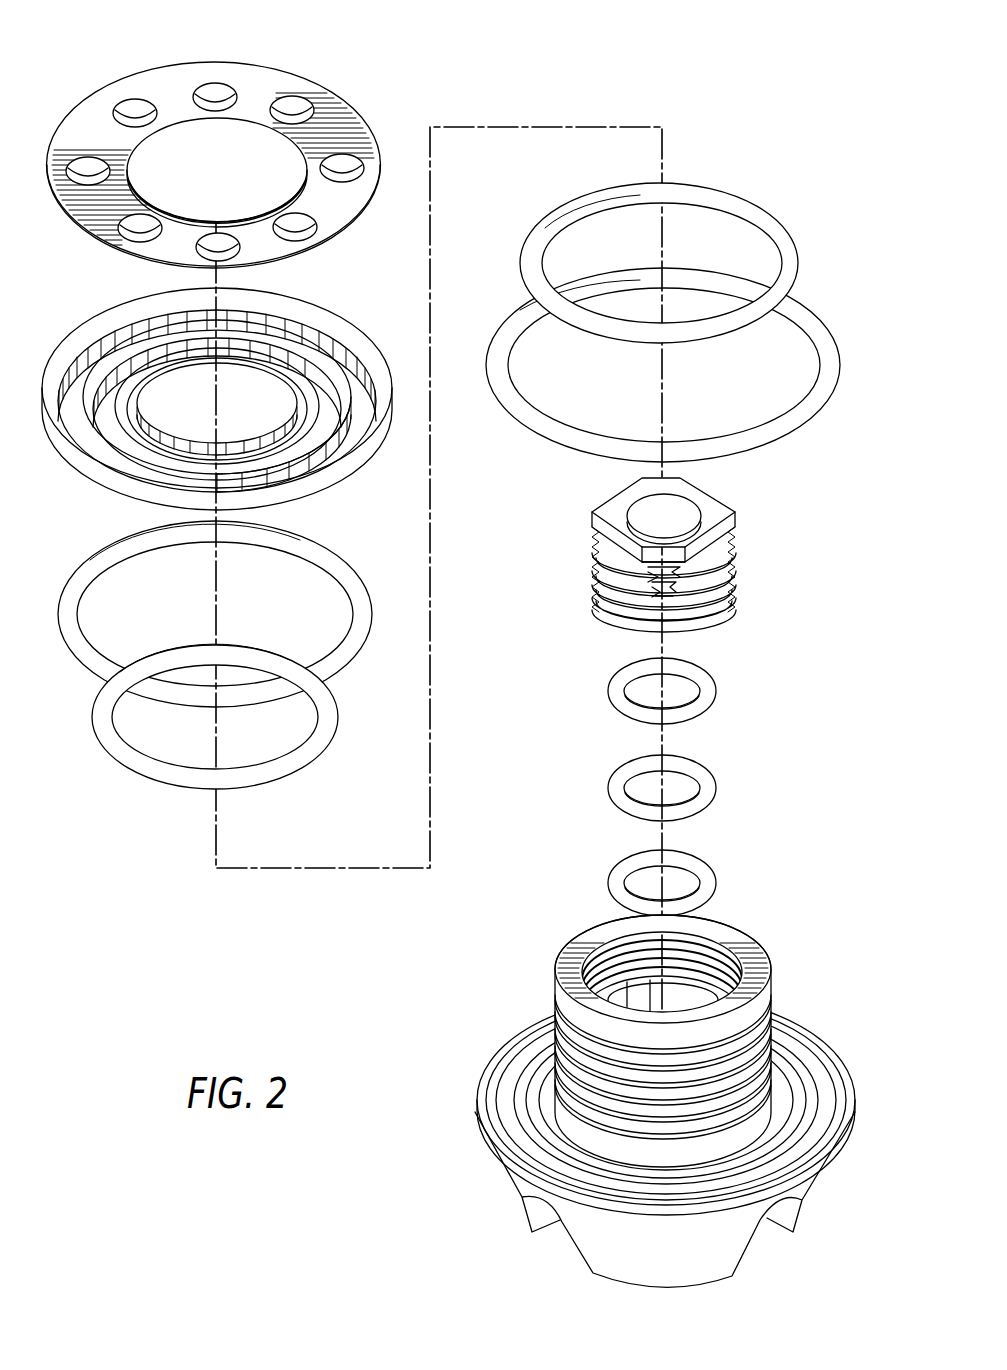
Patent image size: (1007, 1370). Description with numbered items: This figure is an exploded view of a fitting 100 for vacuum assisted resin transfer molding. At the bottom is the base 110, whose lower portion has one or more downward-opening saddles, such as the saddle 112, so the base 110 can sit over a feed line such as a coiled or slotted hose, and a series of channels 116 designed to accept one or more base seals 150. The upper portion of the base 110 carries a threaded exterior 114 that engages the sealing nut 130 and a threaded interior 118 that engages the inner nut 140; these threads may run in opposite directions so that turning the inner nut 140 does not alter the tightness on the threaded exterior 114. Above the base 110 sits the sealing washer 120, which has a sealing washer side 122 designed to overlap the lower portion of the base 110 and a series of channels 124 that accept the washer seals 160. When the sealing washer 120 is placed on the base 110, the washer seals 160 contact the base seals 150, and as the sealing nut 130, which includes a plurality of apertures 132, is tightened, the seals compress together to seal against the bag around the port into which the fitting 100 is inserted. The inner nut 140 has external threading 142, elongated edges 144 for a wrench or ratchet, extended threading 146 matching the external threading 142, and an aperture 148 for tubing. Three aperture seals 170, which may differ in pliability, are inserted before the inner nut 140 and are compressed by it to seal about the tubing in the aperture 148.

The fitting 100 is at (705, 160).
The base 110 is at (649, 1091).
The saddle 112 is at (562, 1222).
The threaded exterior 114 is at (562, 1010).
The channels 116 is at (833, 1100).
The threaded interior 118 is at (603, 960).
The sealing washer 120 is at (227, 388).
The sealing washer side 122 is at (112, 327).
The channels 124 is at (343, 450).
The sealing nut 130 is at (270, 73).
The apertures 132 is at (343, 184).
The inner nut 140 is at (685, 549).
The external threading 142 is at (713, 592).
The elongated edges 144 is at (713, 555).
The extended threading 146 is at (735, 553).
The aperture 148 is at (630, 518).
The base seals 150 is at (760, 210).
The washer seals 160 is at (360, 628).
The aperture seals 170 is at (717, 688).